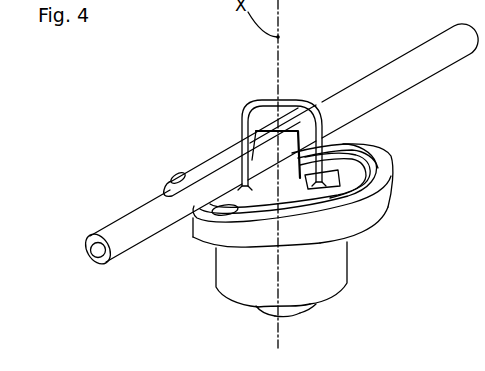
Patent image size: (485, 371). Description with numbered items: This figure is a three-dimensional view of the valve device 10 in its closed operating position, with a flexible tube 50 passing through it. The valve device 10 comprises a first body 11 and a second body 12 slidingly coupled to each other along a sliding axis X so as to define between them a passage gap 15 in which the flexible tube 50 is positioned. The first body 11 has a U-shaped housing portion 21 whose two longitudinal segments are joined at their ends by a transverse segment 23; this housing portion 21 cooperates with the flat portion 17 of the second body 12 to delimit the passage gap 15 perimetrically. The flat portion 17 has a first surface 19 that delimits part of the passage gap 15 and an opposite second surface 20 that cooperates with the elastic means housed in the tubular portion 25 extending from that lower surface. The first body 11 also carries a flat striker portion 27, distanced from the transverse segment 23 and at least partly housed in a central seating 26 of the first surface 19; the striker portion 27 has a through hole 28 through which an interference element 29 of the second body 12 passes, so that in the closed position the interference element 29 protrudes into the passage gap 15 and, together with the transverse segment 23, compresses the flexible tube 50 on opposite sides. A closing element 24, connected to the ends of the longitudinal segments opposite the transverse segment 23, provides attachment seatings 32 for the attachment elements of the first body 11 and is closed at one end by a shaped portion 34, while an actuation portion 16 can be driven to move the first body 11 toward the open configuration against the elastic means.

The valve device 10 is at (178, 117).
The first body 11 is at (290, 102).
The second body 12 is at (392, 206).
The passage gap 15 is at (267, 150).
The actuation portion 16 is at (244, 306).
The flat portion 17 is at (336, 226).
The first surface 19 is at (258, 188).
The second surface 20 is at (302, 246).
The U-shaped housing portion 21 is at (259, 107).
The transverse segment 23 is at (264, 117).
The closing element 24 is at (275, 315).
The tubular portion 25 is at (226, 267).
The central seating 26 is at (364, 188).
The striker portion 27 is at (378, 152).
The through hole 28 is at (360, 161).
The interference element 29 is at (246, 208).
The attachment seating 32 is at (314, 304).
The shaped portion 34 is at (289, 314).
The flexible tube 50 is at (425, 68).